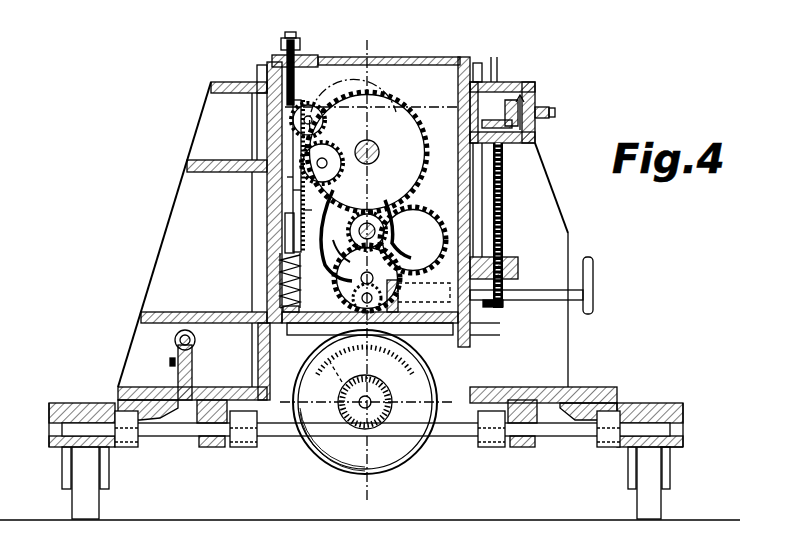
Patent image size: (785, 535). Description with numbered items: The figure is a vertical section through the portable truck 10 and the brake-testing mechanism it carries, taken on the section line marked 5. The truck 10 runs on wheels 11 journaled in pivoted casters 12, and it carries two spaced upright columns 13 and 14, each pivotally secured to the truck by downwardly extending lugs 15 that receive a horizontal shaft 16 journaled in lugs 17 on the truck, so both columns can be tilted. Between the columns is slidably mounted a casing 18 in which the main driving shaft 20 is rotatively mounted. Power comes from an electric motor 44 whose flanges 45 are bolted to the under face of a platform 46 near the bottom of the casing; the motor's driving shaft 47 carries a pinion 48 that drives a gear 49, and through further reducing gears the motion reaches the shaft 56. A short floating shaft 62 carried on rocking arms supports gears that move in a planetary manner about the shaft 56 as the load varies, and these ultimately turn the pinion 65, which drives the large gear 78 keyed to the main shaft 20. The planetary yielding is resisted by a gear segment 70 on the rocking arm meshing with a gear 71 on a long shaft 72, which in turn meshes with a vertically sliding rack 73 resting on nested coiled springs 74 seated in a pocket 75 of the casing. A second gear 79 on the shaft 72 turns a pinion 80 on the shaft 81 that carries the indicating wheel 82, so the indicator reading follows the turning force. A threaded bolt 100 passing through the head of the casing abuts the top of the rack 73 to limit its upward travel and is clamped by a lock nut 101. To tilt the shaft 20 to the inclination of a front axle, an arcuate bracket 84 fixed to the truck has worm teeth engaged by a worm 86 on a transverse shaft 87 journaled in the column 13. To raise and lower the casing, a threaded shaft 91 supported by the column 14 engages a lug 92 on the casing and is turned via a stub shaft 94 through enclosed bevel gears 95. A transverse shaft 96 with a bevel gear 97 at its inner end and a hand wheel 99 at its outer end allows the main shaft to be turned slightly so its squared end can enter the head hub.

The section line 5- 5 is at (340, 45).
The truck 10 is at (650, 403).
The wheels 11 is at (84, 501).
The casters 12 is at (683, 449).
The column 13 is at (166, 228).
The column 14 is at (570, 236).
The lugs 15 is at (128, 448).
The shaft 16 is at (182, 440).
The lugs 17 is at (212, 450).
The casing 18 is at (425, 57).
The main driving shaft 20 is at (380, 152).
The electric motor 44 is at (424, 461).
The flanges 45 is at (480, 336).
The platform 46 is at (485, 324).
The driving shaft 47 is at (393, 403).
The pinion 48 is at (362, 411).
The gear 49 is at (433, 238).
The shaft 56 is at (400, 270).
The short shaft 62 is at (352, 288).
The pinion 65 is at (398, 248).
The gear segment 70 is at (310, 210).
The gear 71 is at (295, 190).
The shaft 72 is at (287, 177).
The rack 73 is at (286, 230).
The coiled springs 74 is at (279, 271).
The pocket 75 is at (283, 293).
The large gear 78 is at (386, 104).
The second gear 79 is at (335, 148).
The pinion 80 is at (322, 112).
The shaft 81 is at (293, 121).
The indicating wheel or disk 82 is at (342, 57).
The arcuate bracket 84 is at (193, 365).
The worm 86 is at (176, 333).
The shaft 87 is at (196, 340).
The threaded shaft 91 is at (504, 228).
The lug 92 is at (518, 266).
The stub shaft 94 is at (553, 108).
The bevel gears 95 is at (502, 89).
The transversely extending shaft 96 is at (588, 318).
The bevel gear 97 is at (388, 336).
The hand wheel 99 is at (594, 272).
The threaded bolt 100 is at (290, 34).
The lock nut 101 is at (280, 48).